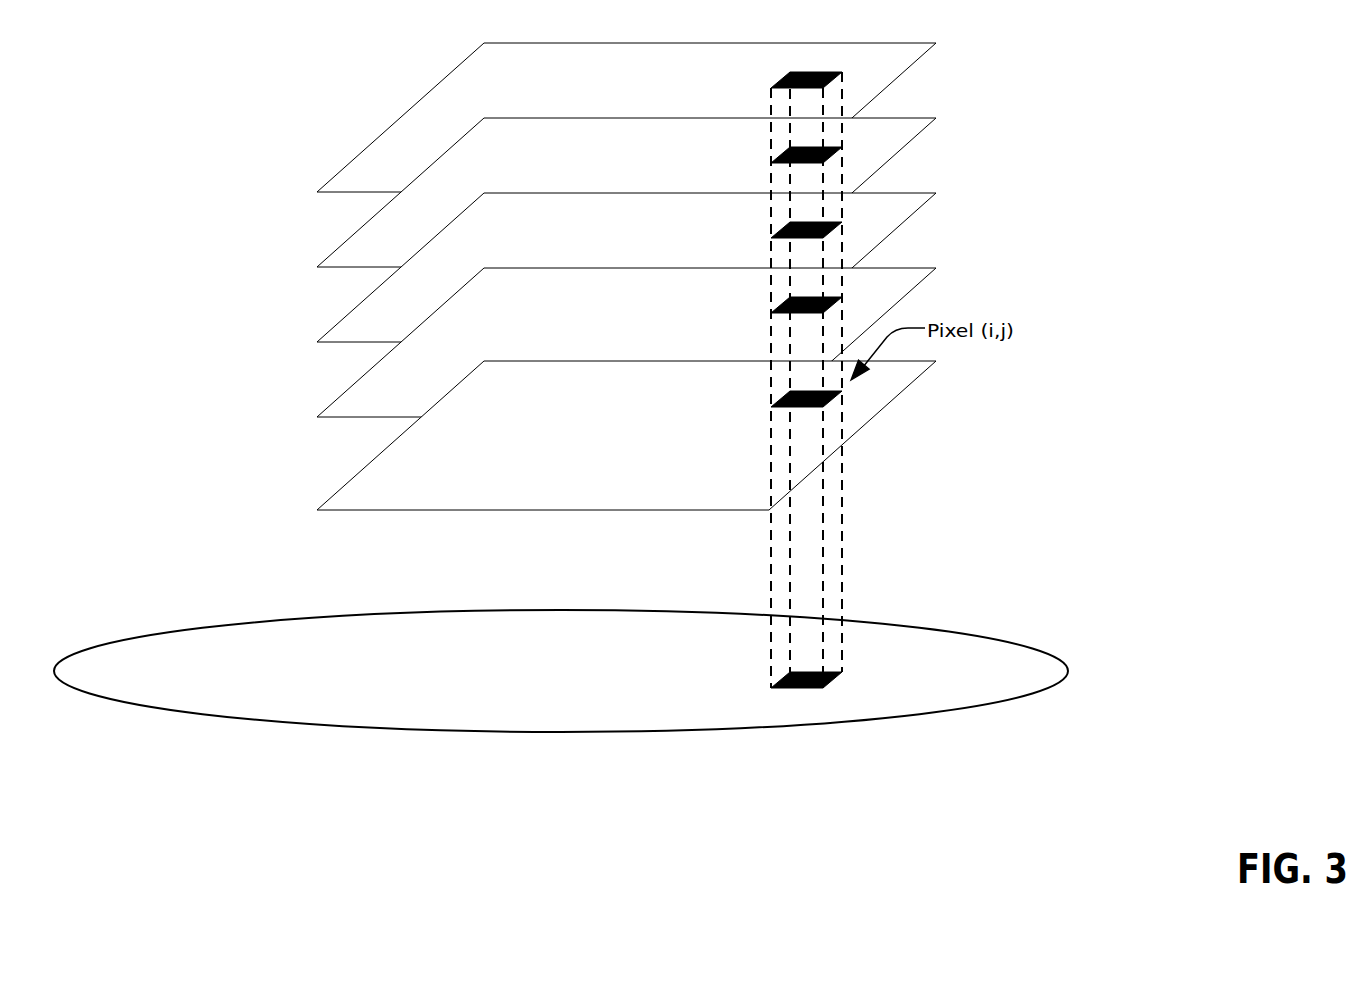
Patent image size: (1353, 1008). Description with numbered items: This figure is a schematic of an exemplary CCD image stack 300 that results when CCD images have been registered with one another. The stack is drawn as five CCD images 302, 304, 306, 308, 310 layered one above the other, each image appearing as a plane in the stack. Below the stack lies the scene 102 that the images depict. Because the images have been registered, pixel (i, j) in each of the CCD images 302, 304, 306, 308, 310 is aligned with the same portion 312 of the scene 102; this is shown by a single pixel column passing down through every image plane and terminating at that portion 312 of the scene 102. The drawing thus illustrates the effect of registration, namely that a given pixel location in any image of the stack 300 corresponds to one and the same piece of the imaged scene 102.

The scene 102 is at (325, 682).
The CCD image stack 300 is at (1016, 93).
The CCD image 302 is at (606, 94).
The CCD image 304 is at (606, 168).
The CCD image 306 is at (606, 244).
The CCD image 308 is at (606, 318).
The CCD image 310 is at (609, 428).
The portion of the scene 312 is at (827, 667).